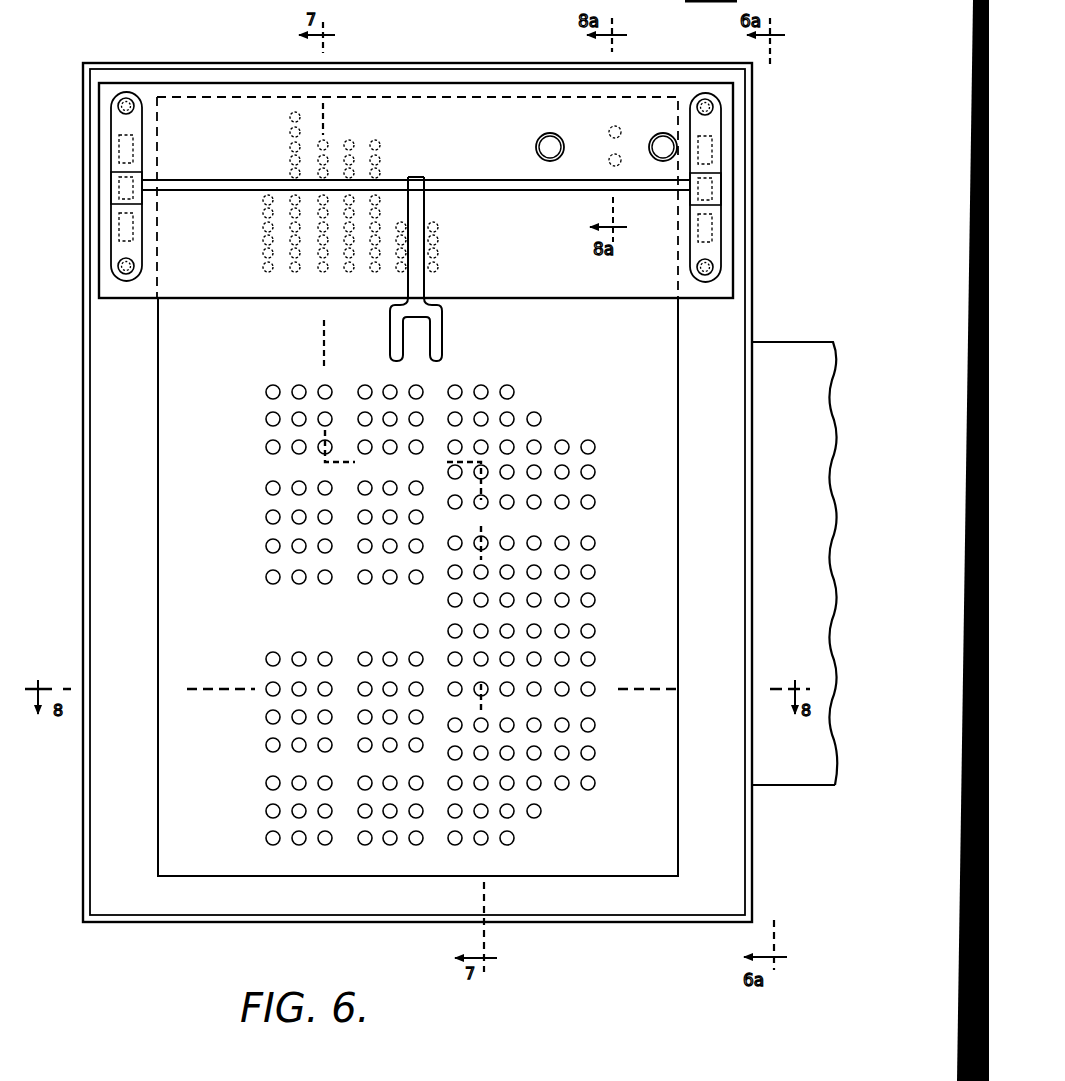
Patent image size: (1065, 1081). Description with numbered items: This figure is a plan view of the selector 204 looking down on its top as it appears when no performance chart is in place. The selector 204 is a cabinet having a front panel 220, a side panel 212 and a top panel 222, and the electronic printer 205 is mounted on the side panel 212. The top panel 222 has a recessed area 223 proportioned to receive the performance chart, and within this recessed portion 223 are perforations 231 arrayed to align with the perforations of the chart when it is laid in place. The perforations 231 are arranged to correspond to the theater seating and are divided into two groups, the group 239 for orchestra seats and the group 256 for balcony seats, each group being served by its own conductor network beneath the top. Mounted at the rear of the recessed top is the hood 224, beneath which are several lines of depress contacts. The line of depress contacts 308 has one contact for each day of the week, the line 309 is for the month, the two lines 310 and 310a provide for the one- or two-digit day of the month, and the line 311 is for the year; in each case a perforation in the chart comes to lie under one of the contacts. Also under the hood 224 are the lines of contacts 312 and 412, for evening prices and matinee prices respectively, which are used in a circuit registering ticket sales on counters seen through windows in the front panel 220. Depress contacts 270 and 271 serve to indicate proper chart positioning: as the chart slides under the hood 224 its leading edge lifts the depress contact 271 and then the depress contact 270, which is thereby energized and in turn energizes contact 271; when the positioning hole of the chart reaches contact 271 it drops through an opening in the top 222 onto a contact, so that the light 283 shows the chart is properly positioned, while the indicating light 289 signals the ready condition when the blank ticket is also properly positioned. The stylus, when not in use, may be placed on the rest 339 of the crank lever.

The selector 204 is at (387, 511).
The front panel 220 is at (575, 922).
The top panel 222 is at (100, 407).
The recessed area 223 is at (157, 346).
The hood 224 is at (200, 82).
The rest 339 is at (442, 350).
The light 283 is at (538, 143).
The indicating light 289 is at (663, 160).
The depress contact 270 is at (616, 124).
The depress contact 271 is at (608, 162).
The line of depress contacts 308 is at (268, 278).
The line of depress contacts 309 is at (296, 278).
The line of depress contacts 310 is at (324, 278).
The line of depress contacts 311 is at (350, 278).
The line of depress contacts 310a is at (376, 278).
The line of depress contacts 312 is at (402, 278).
The line of depress contacts 412 is at (433, 278).
The side panel 212 is at (753, 432).
The electronic printer 205 is at (777, 786).
The group of perforations 256 is at (428, 848).
The group of perforations 239 is at (546, 632).
The perforations 231 is at (594, 470).